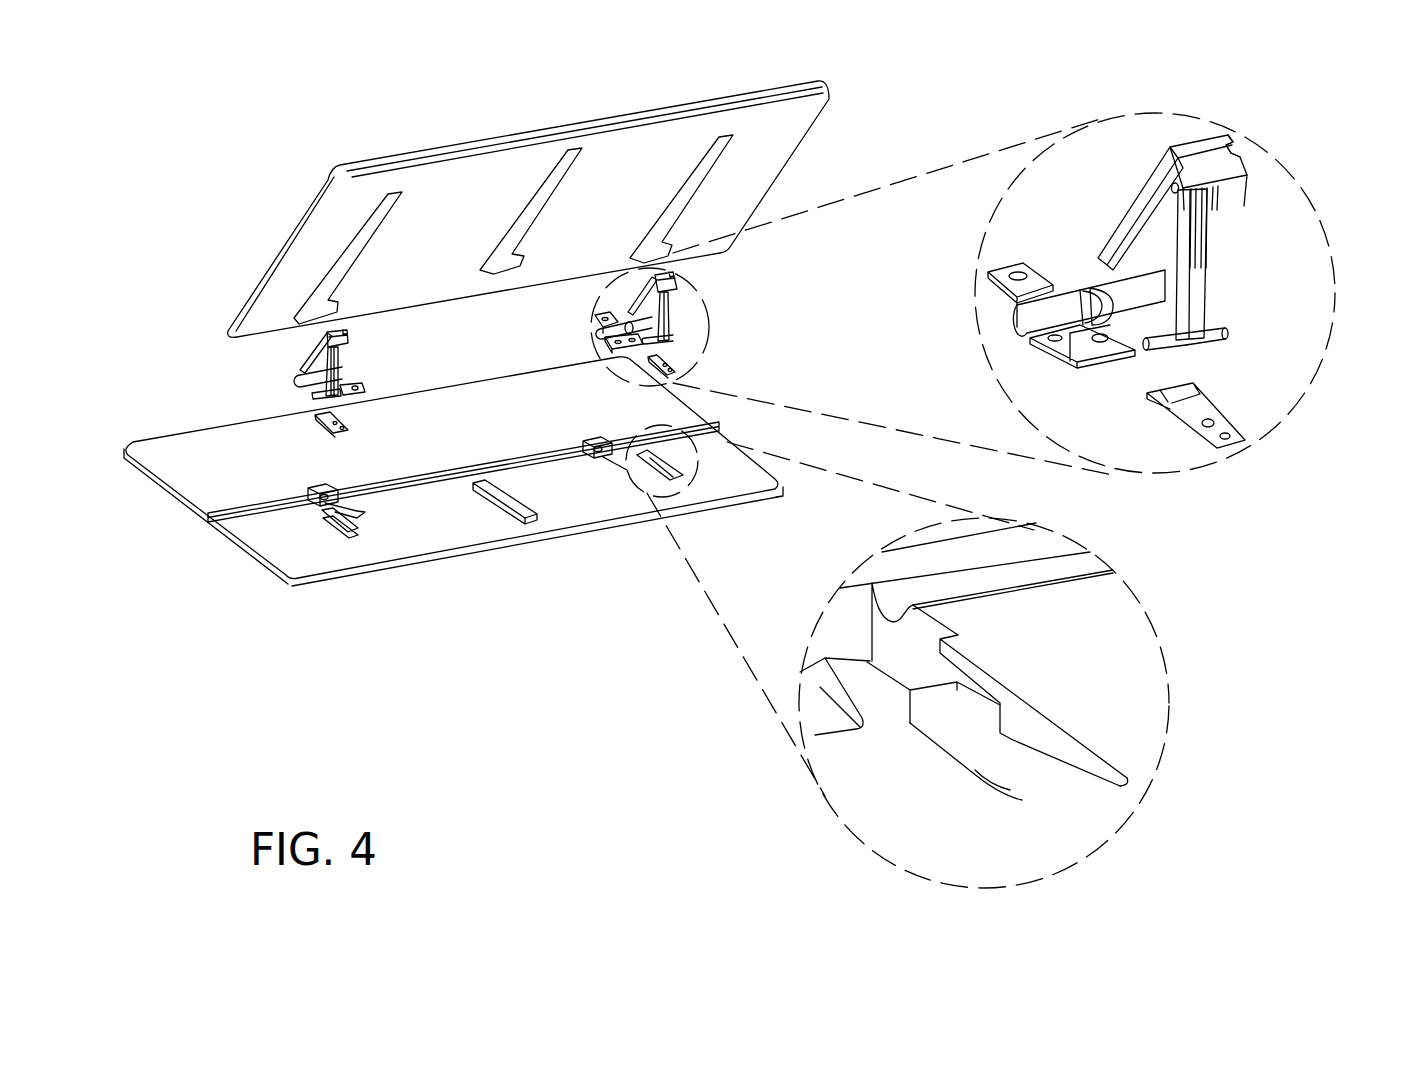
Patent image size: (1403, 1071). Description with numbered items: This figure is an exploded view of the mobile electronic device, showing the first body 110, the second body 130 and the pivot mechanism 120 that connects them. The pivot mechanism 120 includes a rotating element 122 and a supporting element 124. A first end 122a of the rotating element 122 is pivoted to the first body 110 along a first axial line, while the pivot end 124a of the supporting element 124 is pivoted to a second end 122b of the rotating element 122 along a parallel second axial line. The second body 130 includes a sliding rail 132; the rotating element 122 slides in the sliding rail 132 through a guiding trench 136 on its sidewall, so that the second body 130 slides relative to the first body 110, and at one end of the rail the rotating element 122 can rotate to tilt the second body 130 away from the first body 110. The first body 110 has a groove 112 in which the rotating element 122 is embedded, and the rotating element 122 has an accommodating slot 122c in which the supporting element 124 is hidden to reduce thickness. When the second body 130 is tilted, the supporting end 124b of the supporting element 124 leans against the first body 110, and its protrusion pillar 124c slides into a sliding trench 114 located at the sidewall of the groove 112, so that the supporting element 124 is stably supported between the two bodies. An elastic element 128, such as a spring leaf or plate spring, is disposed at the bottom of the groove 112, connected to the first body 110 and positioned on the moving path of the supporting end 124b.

The first body 110 is at (577, 508).
The groove 112 is at (1062, 758).
The sliding trench 114 is at (978, 706).
The pivot mechanism 120 is at (574, 310).
The rotating element 122 is at (1234, 165).
The first end 122a is at (1077, 271).
The second end 122b is at (1259, 187).
The accommodating slot 122c is at (1158, 267).
The supporting element 124 is at (1200, 300).
The pivot end 124a is at (1235, 238).
The supporting end 124b is at (1242, 338).
The protrusion pillar 124c is at (1162, 342).
The elastic element 128 is at (1228, 424).
The second body 130 is at (782, 149).
The sliding rail 132 is at (657, 228).
The guiding trench 136 is at (1154, 170).